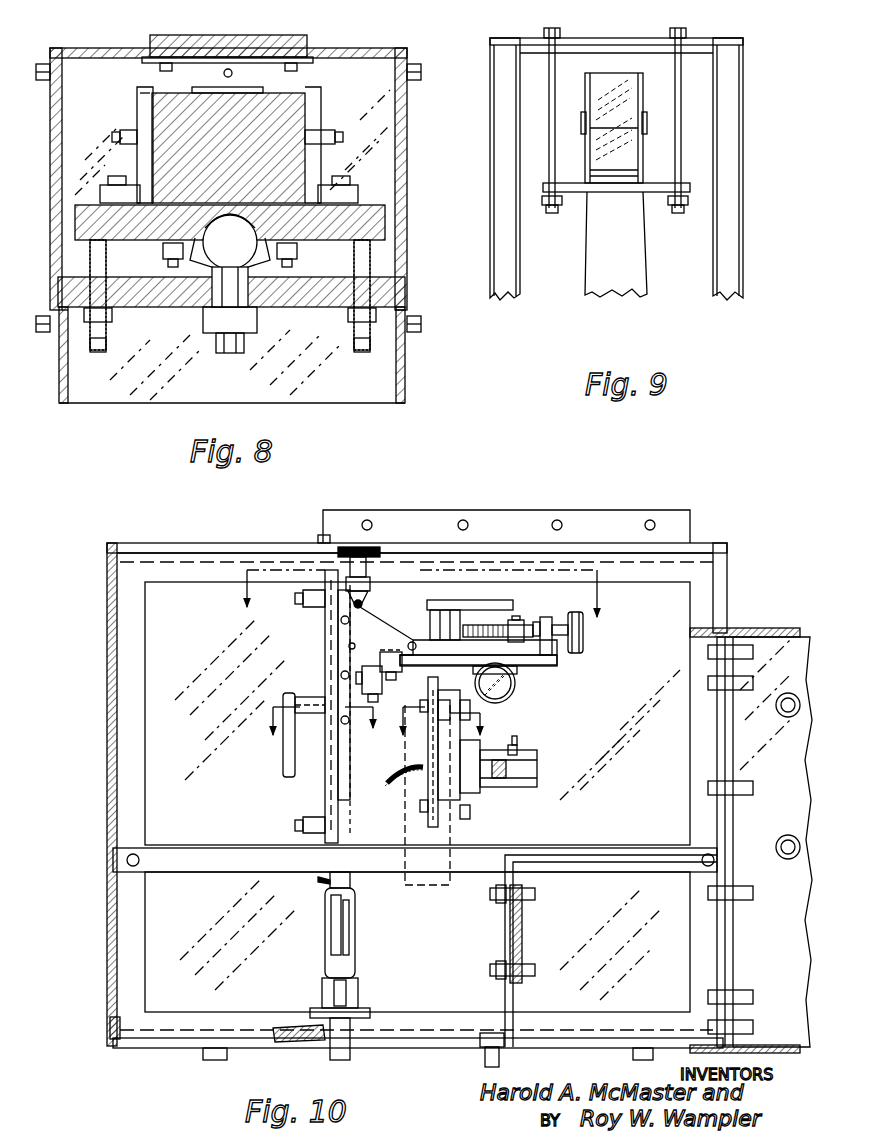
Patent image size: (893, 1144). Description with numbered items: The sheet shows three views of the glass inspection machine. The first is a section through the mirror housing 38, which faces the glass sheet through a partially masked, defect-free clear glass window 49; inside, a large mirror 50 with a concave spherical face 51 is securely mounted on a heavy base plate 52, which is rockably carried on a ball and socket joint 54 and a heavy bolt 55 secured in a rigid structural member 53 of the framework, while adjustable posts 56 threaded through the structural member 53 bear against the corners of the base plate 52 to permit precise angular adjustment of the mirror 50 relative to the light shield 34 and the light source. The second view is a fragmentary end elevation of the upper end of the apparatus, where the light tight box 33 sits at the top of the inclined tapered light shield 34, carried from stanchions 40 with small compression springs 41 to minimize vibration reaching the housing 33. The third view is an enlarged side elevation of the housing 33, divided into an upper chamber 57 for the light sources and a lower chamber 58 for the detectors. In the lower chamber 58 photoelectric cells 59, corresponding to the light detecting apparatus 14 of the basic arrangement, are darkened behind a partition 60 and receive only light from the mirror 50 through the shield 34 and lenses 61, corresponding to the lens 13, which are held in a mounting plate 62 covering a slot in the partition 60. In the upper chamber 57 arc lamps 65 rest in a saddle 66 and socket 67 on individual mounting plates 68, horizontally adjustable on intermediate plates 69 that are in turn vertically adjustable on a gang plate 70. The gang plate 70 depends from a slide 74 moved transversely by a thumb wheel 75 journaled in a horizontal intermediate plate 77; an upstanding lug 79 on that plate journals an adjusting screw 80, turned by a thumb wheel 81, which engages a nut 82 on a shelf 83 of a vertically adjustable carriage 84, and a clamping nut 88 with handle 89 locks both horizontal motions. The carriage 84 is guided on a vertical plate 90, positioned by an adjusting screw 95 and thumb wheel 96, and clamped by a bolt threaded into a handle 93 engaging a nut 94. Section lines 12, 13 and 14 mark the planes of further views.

In FIG. 10, the section line 12- 12 is at (242, 623).
In FIG. 10, the lens 13 is at (280, 760).
In FIG. 10, the light detecting apparatus 14 is at (410, 755).
In FIG. 9, the light tight box 33 is at (605, 140).
In FIG. 10, the light tight box 33 is at (107, 655).
In FIG. 9, the light shield 34 is at (614, 256).
In FIG. 10, the light shield 34 is at (745, 660).
In FIG. 8, the mirror housing 38 is at (407, 162).
In FIG. 9, the stanchions 40 is at (503, 238).
In FIG. 9, the compression springs 41 is at (549, 208).
In FIG. 8, the clear glass window 49 is at (275, 50).
In FIG. 8, the mirror 50 is at (275, 160).
In FIG. 8, the concave spherical face 51 is at (275, 92).
In FIG. 8, the base plate 52 is at (360, 228).
In FIG. 8, the rigid structural member 53 is at (253, 292).
In FIG. 8, the ball and socket joint 54 is at (240, 247).
In FIG. 8, the heavy bolt 55 is at (252, 326).
In FIG. 8, the adjustable posts 56 is at (372, 262).
In FIG. 10, the upper chamber 57 is at (188, 625).
In FIG. 10, the lower chamber 58 is at (192, 905).
In FIG. 10, the photoelectric cells 59 is at (336, 940).
In FIG. 10, the partition 60 is at (514, 1000).
In FIG. 10, the lenses 61 is at (522, 935).
In FIG. 10, the mounting plate 62 is at (524, 893).
In FIG. 10, the arc lamps 65 is at (528, 760).
In FIG. 10, the saddle 66 is at (497, 785).
In FIG. 10, the socket 67 is at (464, 790).
In FIG. 10, the mounting plate 68 is at (450, 757).
In FIG. 10, the intermediate plate 69 is at (432, 784).
In FIG. 10, the gang plate 70 is at (432, 772).
In FIG. 10, the slide 74 is at (388, 668).
In FIG. 10, the thumb wheel 75 is at (513, 692).
In FIG. 10, the intermediate plate 77 is at (535, 660).
In FIG. 10, the lug 79 is at (546, 625).
In FIG. 10, the adjusting screw 80 is at (520, 628).
In FIG. 10, the thumb wheel 81 is at (583, 640).
In FIG. 10, the nut 82 is at (505, 628).
In FIG. 10, the shelf 83 is at (425, 645).
In FIG. 10, the vertically adjustable carriage 84 is at (347, 647).
In FIG. 10, the clamping nut 88 is at (440, 622).
In FIG. 10, the handle 89 is at (475, 600).
In FIG. 10, the vertical plate 90 is at (326, 663).
In FIG. 10, the handle 93 is at (298, 723).
In FIG. 10, the nut 94 is at (372, 700).
In FIG. 10, the adjusting screw 95 is at (362, 606).
In FIG. 10, the thumb wheel 96 is at (366, 553).